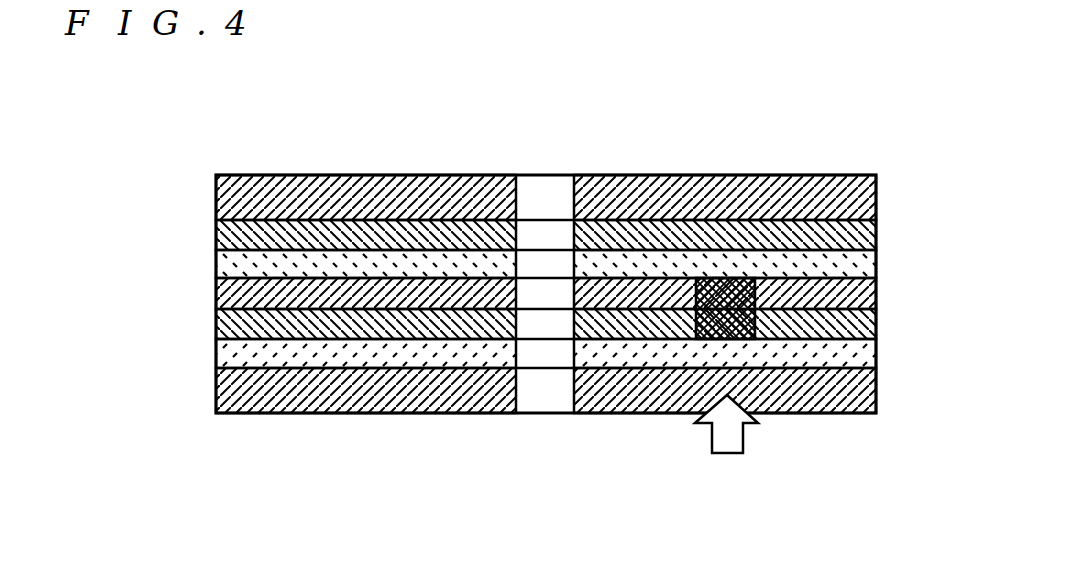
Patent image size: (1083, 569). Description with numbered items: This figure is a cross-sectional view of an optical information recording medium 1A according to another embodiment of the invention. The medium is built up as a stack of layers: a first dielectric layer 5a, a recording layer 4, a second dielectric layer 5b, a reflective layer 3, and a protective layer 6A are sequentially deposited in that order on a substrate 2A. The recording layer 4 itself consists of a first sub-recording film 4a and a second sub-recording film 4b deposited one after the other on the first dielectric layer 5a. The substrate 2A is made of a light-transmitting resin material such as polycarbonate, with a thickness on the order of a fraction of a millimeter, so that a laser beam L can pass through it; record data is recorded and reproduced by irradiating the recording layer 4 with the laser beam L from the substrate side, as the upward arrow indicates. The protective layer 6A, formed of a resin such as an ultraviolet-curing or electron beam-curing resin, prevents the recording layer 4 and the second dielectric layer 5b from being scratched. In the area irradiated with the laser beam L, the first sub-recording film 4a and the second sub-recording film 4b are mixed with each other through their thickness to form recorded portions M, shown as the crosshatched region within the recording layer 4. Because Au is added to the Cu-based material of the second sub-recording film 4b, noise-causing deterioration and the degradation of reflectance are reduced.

The optical information recording medium 1A is at (568, 78).
The protective layer 6A is at (876, 193).
The reflective layer 3 is at (876, 228).
The second dielectric layer 5b is at (876, 262).
The second sub-recording film 4b is at (876, 292).
The first sub-recording film 4a is at (876, 320).
The recording layer 4 is at (600, 309).
The first dielectric layer 5a is at (876, 349).
The substrate 2A is at (876, 390).
The recorded portions M is at (726, 278).
The laser beam L is at (711, 438).